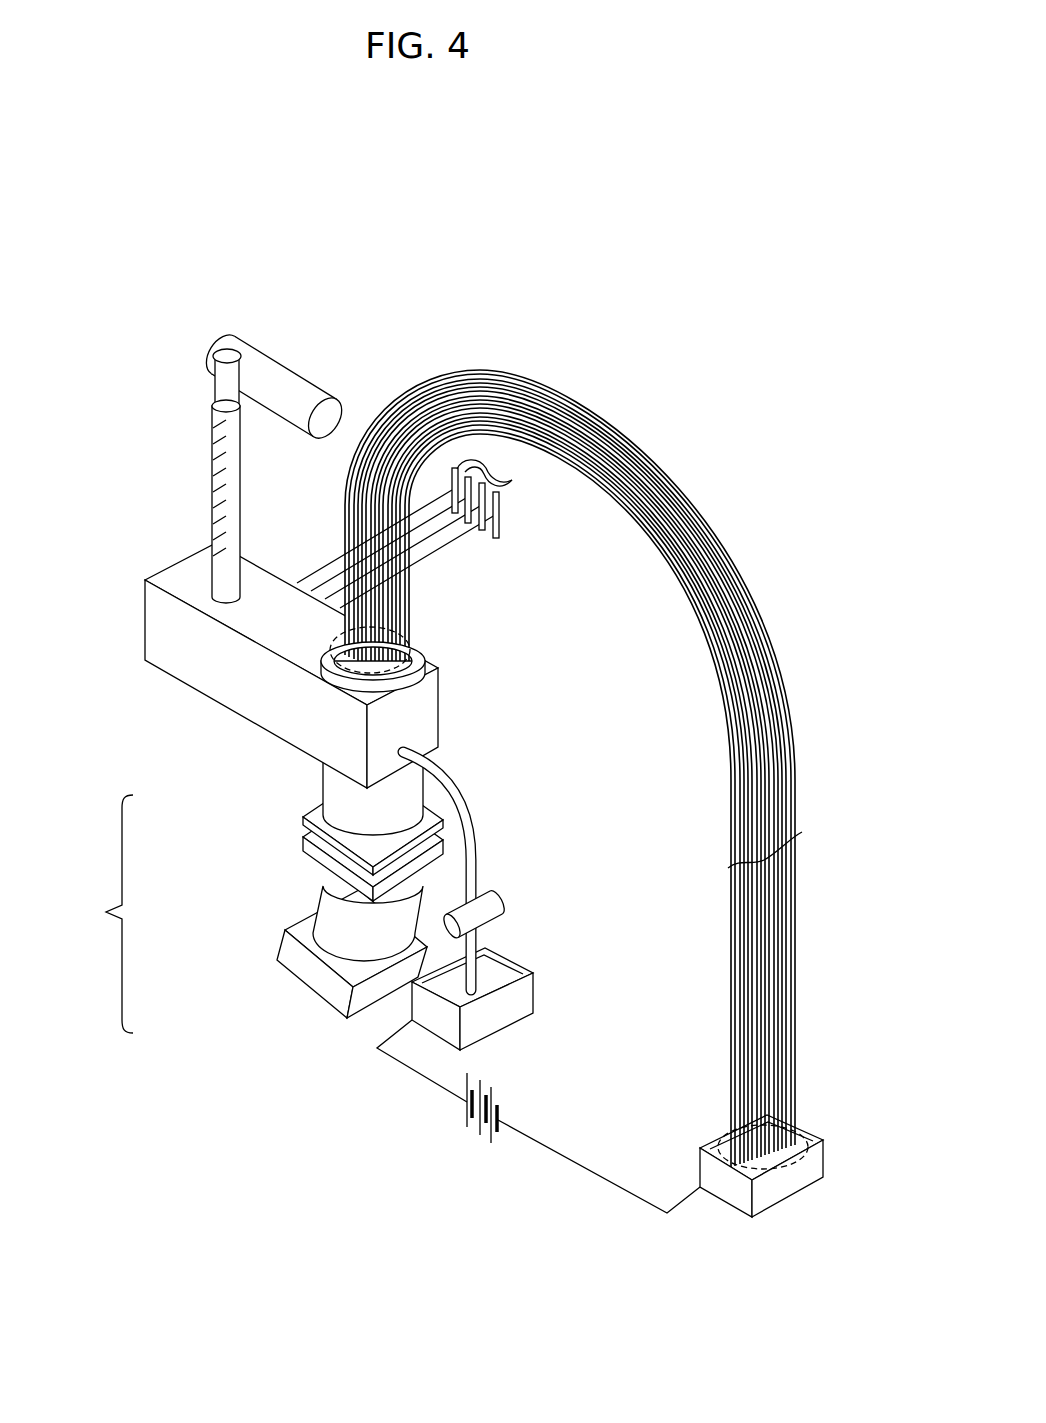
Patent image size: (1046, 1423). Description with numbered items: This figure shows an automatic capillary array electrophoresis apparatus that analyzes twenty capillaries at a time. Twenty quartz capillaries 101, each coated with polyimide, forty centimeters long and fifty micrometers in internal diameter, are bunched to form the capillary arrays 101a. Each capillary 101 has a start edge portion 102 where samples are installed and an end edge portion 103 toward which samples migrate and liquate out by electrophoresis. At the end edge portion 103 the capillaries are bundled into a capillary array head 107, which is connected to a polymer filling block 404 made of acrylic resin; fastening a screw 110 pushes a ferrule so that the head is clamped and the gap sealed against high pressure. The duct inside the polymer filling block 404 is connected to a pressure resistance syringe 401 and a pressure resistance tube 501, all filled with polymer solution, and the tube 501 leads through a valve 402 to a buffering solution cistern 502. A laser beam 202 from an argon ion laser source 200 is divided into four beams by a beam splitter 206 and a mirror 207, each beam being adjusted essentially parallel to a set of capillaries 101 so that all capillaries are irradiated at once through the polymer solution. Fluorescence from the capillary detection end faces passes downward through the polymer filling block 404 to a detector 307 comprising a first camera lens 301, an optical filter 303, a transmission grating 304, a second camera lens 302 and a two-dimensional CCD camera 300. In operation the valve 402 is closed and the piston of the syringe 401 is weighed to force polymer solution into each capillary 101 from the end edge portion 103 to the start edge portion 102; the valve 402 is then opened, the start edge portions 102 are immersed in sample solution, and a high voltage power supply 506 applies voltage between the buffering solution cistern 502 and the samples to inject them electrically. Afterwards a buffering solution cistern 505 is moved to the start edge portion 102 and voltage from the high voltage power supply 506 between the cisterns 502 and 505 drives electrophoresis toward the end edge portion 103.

The capillary 101 is at (793, 963).
The capillary arrays 101a is at (793, 892).
The start edge portion 102 is at (800, 1123).
The end edge portion 103 is at (425, 652).
The capillary array head 107 is at (237, 688).
The screw 110 is at (430, 668).
The argon ion laser source 200 is at (283, 360).
The laser beam 202 is at (433, 550).
The beam splitter 206 is at (512, 480).
The mirror 207 is at (500, 514).
The two-dimensional CCD camera 300 is at (307, 970).
The first camera lens 301 is at (326, 787).
The second camera lens 302 is at (310, 917).
The optical filter 303 is at (320, 830).
The transmission grating 304 is at (315, 857).
The detector 307 is at (81, 914).
The pressure resistance syringe 401 is at (213, 463).
The valve 402 is at (498, 895).
The polymer filling block 404 is at (440, 726).
The pressure resistance tube 501 is at (470, 836).
The buffering solution cistern 502 is at (433, 1015).
The buffering solution cistern 505 is at (727, 1190).
The high voltage power supply 506 is at (467, 1127).